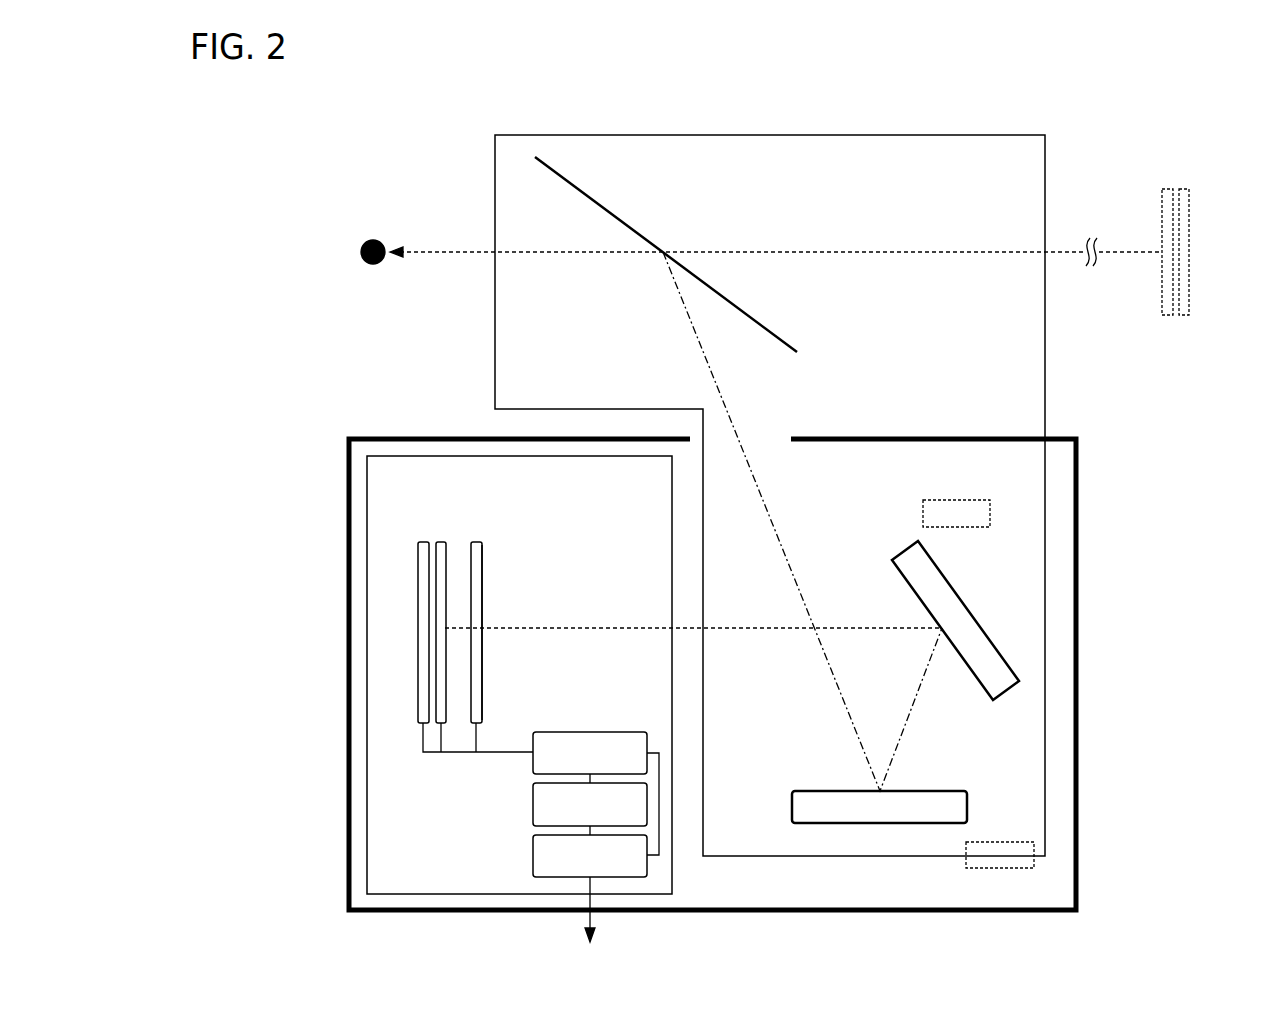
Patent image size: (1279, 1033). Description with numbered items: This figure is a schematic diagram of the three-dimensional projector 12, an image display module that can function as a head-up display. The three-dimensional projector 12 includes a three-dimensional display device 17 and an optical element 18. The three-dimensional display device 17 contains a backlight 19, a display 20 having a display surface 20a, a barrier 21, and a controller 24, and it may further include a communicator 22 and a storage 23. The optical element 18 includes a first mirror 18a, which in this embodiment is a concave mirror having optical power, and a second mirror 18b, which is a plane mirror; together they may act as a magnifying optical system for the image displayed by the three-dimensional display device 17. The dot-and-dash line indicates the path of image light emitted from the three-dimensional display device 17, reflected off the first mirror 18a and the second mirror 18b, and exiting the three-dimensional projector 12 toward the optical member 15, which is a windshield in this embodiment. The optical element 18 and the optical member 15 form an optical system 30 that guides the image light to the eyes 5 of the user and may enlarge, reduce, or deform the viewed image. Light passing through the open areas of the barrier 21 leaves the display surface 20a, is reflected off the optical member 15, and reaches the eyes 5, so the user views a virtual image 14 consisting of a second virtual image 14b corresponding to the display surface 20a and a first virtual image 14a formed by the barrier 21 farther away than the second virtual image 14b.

The eyes 5 is at (360, 252).
The 3D projector 12 is at (349, 472).
The virtual image 14 is at (1180, 307).
The first virtual image 14a is at (1206, 287).
The second virtual image 14b is at (1166, 316).
The optical member 15 is at (573, 184).
The 3D display device 17 is at (367, 525).
The optical element 18 is at (913, 684).
The first mirror 18a is at (930, 563).
The second mirror 18b is at (942, 790).
The backlight 19 is at (423, 540).
The display 20 is at (477, 540).
The display surface 20a is at (483, 572).
The barrier 21 is at (441, 540).
The communicator 22 is at (533, 855).
The storage 23 is at (533, 803).
The controller 24 is at (558, 731).
The optical system 30 is at (1045, 160).